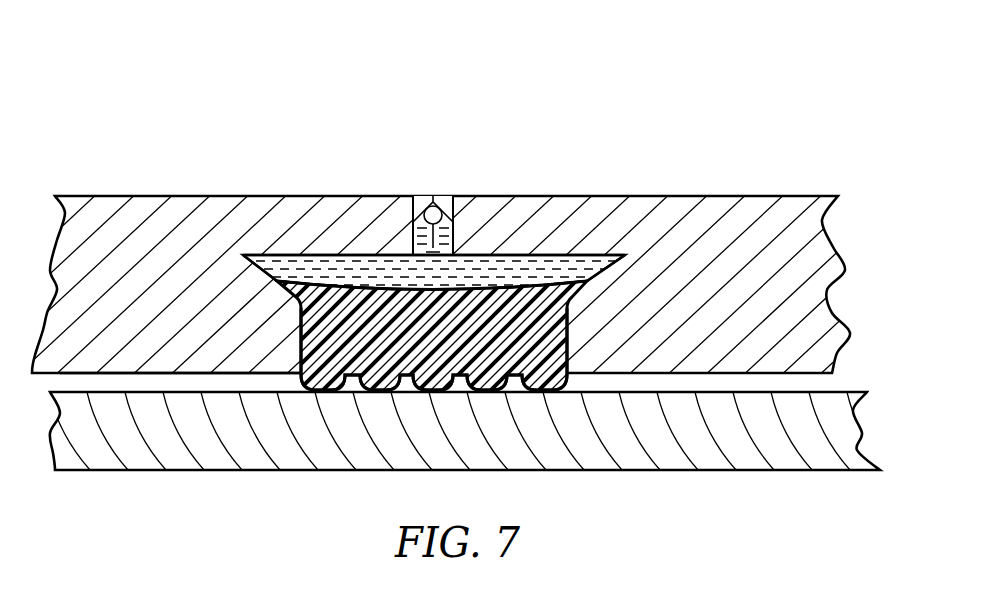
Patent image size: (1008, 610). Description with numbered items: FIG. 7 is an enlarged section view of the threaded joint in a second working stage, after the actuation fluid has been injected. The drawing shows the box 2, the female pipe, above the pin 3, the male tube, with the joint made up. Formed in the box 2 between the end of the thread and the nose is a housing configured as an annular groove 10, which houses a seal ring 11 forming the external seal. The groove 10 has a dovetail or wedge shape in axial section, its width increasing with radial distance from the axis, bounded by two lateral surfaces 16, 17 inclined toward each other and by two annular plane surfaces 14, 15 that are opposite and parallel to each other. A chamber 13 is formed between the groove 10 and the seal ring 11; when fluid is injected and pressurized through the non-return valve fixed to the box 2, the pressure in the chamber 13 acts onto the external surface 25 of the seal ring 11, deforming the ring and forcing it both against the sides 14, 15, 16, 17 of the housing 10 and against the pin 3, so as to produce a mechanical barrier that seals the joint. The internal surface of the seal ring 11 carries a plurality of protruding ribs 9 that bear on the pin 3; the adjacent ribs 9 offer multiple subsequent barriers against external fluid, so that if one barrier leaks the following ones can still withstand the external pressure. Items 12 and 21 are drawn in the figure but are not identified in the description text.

The box 2 is at (213, 223).
The pin 3 is at (817, 445).
The protruding ribs 9 is at (370, 382).
The annular groove 10 is at (587, 253).
The seal ring 11 is at (537, 350).
The gap 12 is at (168, 385).
The chamber 13 is at (328, 266).
The annular plane surface 14 is at (300, 338).
The annular plane surface 15 is at (567, 350).
The lateral surface 16 is at (283, 281).
The lateral surface 17 is at (600, 273).
The channel 21 is at (442, 203).
The external surface 25 is at (522, 277).